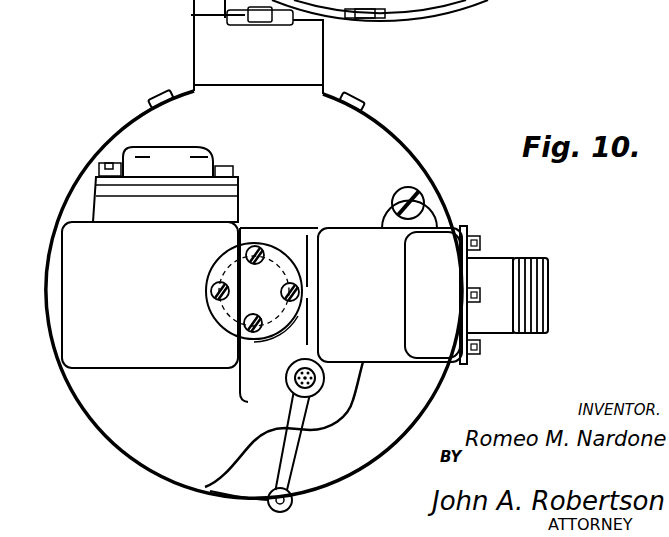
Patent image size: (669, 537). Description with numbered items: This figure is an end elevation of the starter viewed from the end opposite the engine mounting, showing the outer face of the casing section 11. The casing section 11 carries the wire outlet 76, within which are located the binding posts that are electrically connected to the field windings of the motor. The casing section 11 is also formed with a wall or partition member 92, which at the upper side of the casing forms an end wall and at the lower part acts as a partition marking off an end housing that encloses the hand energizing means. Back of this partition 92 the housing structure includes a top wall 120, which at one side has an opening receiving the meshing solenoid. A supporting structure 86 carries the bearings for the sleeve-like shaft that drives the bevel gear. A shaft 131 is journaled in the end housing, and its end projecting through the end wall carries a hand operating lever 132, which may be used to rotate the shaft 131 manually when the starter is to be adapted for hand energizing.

The casing section 11 is at (378, 446).
The wire outlet 76 is at (323, 60).
The supporting structure 86 is at (326, 228).
The wall or partition member 92 is at (378, 167).
The top wall 120 is at (236, 214).
The shaft 131 is at (324, 383).
The hand operating lever 132 is at (297, 457).